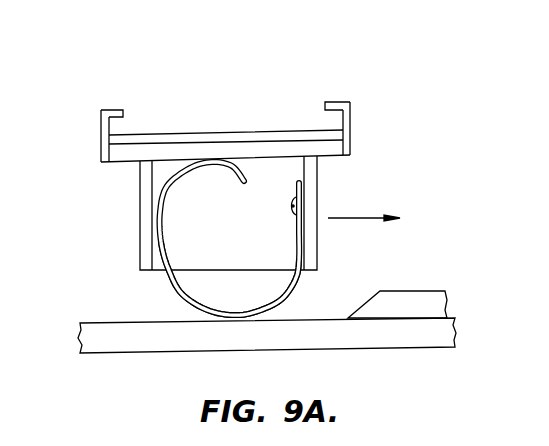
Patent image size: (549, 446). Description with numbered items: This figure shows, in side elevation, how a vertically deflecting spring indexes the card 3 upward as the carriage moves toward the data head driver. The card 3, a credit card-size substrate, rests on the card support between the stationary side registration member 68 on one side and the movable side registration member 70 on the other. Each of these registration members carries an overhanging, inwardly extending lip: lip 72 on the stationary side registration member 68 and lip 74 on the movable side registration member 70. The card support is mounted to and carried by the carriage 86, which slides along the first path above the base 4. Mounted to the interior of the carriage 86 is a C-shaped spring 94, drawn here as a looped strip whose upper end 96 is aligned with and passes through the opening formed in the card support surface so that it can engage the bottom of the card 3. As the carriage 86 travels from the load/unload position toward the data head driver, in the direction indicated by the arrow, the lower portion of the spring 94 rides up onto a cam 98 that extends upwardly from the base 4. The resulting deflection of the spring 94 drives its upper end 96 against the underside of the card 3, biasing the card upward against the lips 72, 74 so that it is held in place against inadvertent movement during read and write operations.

The card 3 is at (224, 131).
The base 4 is at (188, 340).
The stationary side registration member 68 is at (100, 129).
The movable side registration member 70 is at (352, 115).
The overhanging lip 72 is at (112, 110).
The overhanging lip 74 is at (333, 102).
The carriage 86 is at (140, 226).
The C-shaped spring 94 is at (177, 292).
The upper end of spring 96 is at (216, 166).
The cam 98 is at (402, 290).